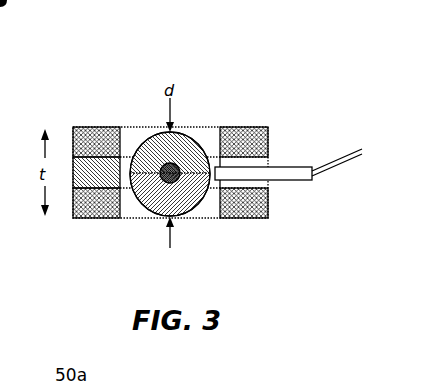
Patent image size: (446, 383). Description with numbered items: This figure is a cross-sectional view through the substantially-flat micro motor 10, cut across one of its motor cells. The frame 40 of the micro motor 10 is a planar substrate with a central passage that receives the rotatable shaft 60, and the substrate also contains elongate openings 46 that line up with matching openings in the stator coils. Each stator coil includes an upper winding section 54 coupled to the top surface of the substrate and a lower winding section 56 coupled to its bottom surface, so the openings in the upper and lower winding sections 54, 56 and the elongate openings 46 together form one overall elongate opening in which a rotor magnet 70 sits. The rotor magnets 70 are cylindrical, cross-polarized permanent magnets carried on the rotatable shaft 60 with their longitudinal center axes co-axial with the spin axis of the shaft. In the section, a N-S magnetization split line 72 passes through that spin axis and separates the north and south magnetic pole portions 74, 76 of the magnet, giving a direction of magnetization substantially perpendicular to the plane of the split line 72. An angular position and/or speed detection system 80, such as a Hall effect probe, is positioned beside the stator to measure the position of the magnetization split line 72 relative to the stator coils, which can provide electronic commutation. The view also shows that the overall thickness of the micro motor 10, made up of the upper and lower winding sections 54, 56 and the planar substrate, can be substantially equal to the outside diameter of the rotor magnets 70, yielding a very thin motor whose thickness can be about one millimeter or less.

The micro motor 10 is at (280, 80).
The frame 40 is at (268, 163).
The elongate openings 46 is at (132, 162).
The upper winding section 54 is at (80, 137).
The lower winding section 56 is at (80, 200).
The rotatable shaft 60 is at (205, 193).
The rotor magnets 70 is at (216, 134).
The magnetization split line 72 is at (143, 203).
The north magnetic pole portion 74 is at (202, 153).
The south magnetic pole portion 76 is at (157, 202).
The angular position and/or speed detection system 80 is at (311, 197).